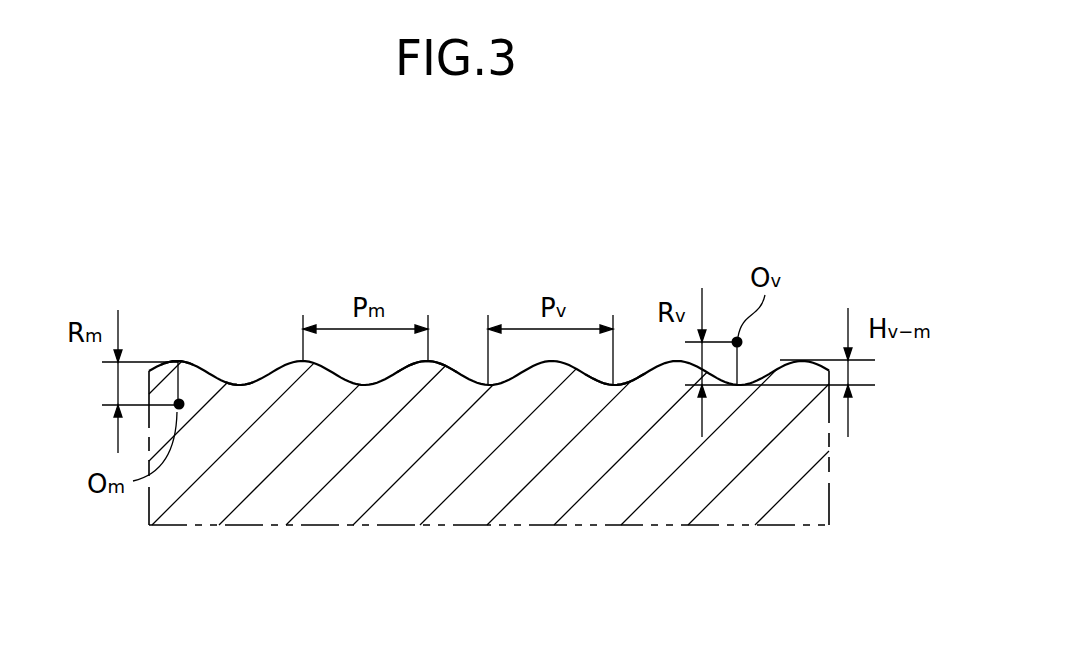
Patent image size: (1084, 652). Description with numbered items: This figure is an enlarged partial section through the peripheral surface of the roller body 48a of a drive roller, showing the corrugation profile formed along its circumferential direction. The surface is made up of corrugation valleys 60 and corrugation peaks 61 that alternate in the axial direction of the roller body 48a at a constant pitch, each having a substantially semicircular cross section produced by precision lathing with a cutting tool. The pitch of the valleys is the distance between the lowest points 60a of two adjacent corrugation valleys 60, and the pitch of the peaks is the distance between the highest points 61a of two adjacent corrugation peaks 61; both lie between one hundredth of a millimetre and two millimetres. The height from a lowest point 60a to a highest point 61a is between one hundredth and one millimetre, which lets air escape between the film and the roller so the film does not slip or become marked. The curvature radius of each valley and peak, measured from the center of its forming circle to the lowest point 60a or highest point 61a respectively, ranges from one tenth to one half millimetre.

The roller body 48a is at (495, 518).
The corrugation valley 60 is at (632, 382).
The lowest point 60a is at (238, 383).
The corrugation peak 61 is at (440, 360).
The highest point 61a is at (178, 360).